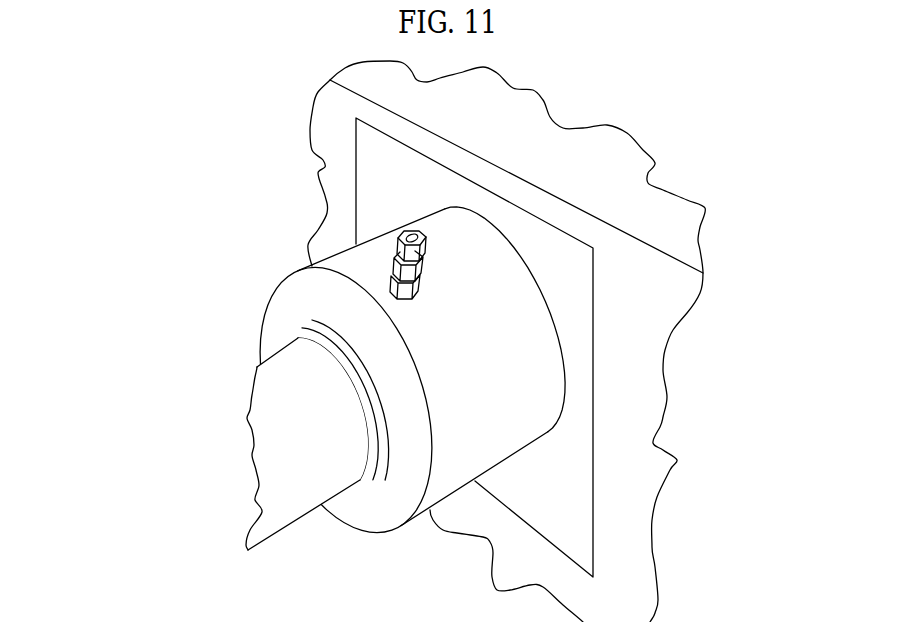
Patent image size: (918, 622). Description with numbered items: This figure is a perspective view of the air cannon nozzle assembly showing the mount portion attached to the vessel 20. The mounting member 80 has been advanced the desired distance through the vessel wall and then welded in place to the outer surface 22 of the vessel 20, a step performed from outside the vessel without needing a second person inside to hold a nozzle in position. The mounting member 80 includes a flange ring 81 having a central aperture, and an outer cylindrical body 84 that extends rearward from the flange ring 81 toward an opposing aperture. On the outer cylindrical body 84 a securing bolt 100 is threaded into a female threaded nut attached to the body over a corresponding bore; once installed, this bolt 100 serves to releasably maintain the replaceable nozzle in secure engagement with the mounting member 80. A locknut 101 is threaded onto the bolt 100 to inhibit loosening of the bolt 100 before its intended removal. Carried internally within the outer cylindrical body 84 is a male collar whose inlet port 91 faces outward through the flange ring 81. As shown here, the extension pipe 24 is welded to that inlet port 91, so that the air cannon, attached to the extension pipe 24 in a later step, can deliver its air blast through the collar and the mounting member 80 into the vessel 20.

The vessel 20 is at (548, 341).
The outer surface 22 is at (635, 378).
The extension pipe 24 is at (283, 506).
The mounting member 80 is at (440, 378).
The flange ring 81 is at (277, 300).
The outer cylindrical body 84 is at (530, 333).
The inlet port 91 is at (330, 378).
The bolt 100 is at (397, 242).
The locknut 101 is at (390, 262).